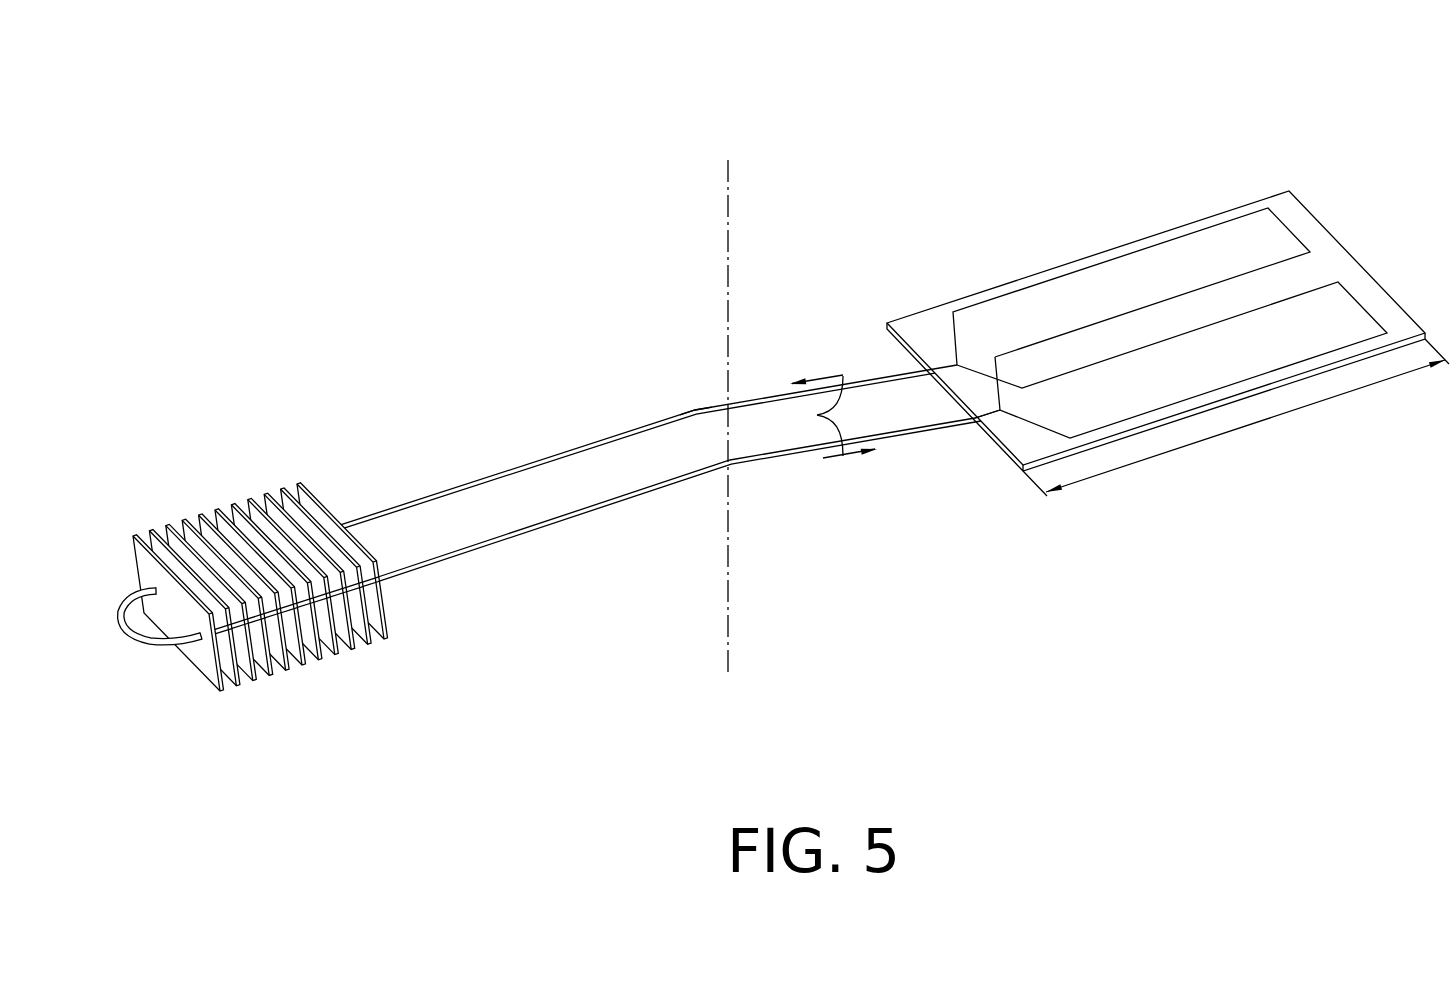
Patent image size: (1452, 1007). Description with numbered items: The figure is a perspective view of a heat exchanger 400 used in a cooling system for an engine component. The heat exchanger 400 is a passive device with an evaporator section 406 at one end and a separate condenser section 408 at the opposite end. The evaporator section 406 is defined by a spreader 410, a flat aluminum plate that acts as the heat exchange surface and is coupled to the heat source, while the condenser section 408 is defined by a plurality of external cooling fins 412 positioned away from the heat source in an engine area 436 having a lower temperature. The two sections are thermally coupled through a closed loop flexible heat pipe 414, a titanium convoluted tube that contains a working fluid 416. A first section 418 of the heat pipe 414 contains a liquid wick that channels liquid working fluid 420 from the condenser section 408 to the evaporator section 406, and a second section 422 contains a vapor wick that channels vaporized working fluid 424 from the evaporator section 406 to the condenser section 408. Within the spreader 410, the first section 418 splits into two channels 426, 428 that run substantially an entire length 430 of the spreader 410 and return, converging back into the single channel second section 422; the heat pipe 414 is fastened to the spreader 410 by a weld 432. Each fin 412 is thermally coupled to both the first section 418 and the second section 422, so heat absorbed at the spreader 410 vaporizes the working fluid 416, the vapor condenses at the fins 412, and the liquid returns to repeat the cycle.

The heat exchanger 400 is at (1183, 86).
The evaporator section 406 is at (1161, 302).
The condenser section 408 is at (255, 553).
The spreader 410 is at (1336, 234).
The external cooling fins 412 is at (297, 486).
The flexible heat pipe 414 is at (510, 470).
The working fluid 416 is at (804, 416).
The first section 418 is at (562, 527).
The liquid working fluid 420 is at (838, 460).
The second section 422 is at (697, 414).
The vaporized working fluid 424 is at (826, 378).
The channel 426 is at (1190, 293).
The channel 428 is at (1153, 245).
The length 430 is at (1243, 428).
The weld 432 is at (965, 418).
The engine area 436 is at (703, 229).